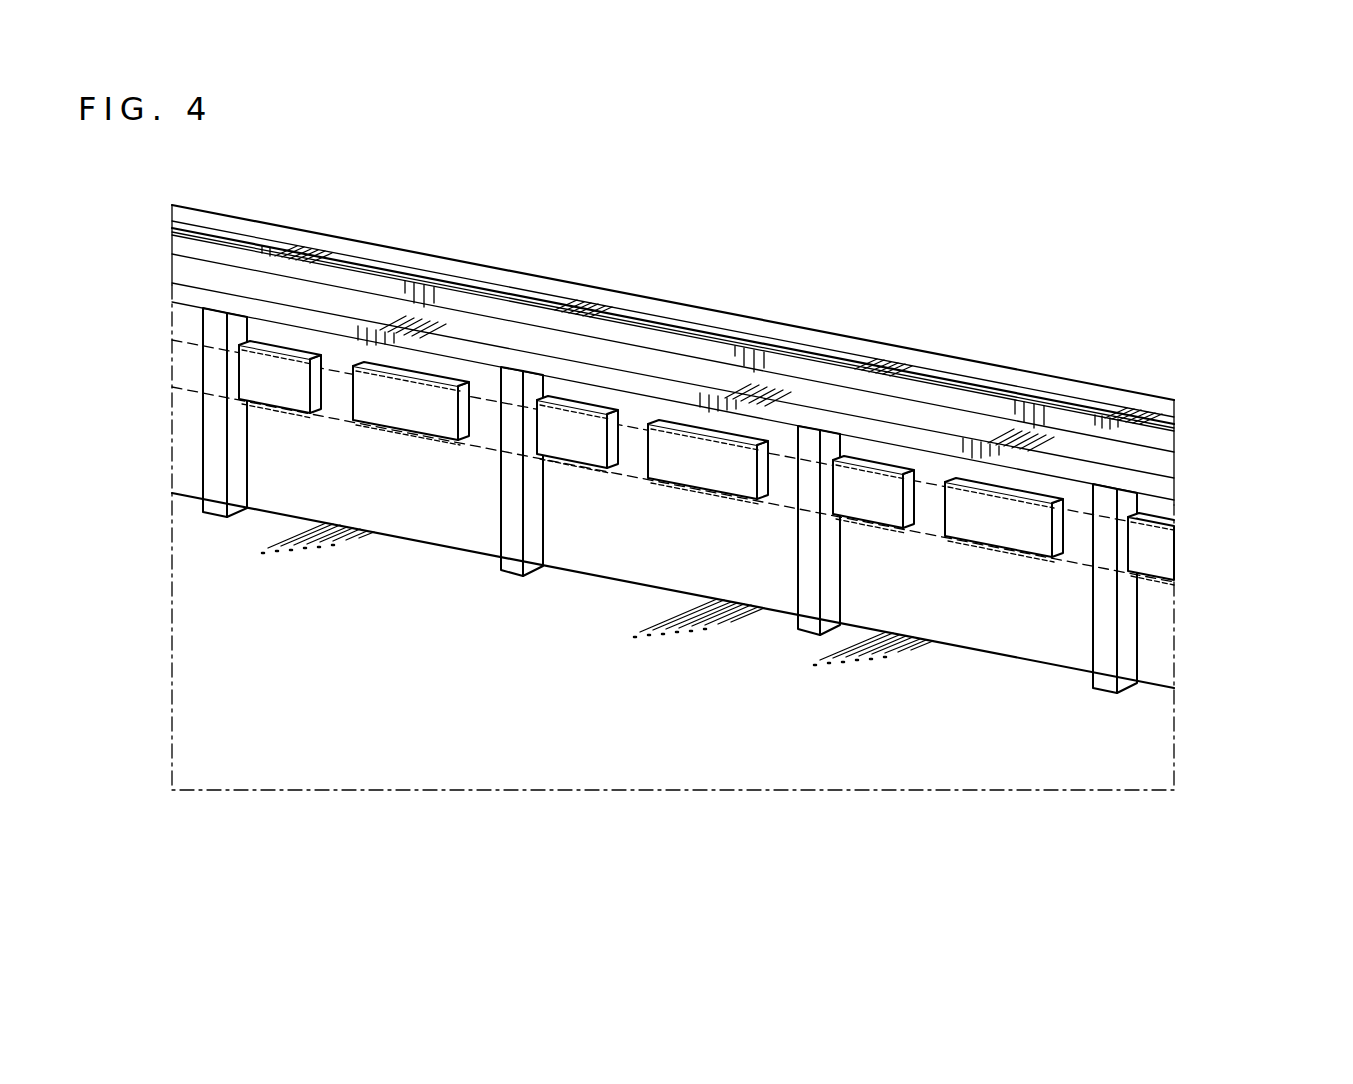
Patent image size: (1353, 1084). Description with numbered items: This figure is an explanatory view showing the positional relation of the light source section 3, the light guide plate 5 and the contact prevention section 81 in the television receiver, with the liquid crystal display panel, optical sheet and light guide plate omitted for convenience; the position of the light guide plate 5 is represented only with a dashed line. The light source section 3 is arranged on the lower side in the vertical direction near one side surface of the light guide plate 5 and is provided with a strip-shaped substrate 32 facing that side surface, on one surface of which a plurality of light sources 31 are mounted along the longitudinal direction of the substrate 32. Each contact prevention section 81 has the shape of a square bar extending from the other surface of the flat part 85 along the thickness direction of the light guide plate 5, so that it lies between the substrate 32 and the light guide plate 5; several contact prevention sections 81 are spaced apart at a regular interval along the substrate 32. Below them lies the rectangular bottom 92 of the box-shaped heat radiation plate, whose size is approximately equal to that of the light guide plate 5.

The light source section 3 is at (1288, 543).
The light guide plate 5 is at (202, 337).
The light source 31 is at (1163, 553).
The substrate 32 is at (1158, 623).
The contact prevention section 81 is at (1103, 686).
The flat part 85 is at (1062, 443).
The bottom 92 is at (1000, 772).